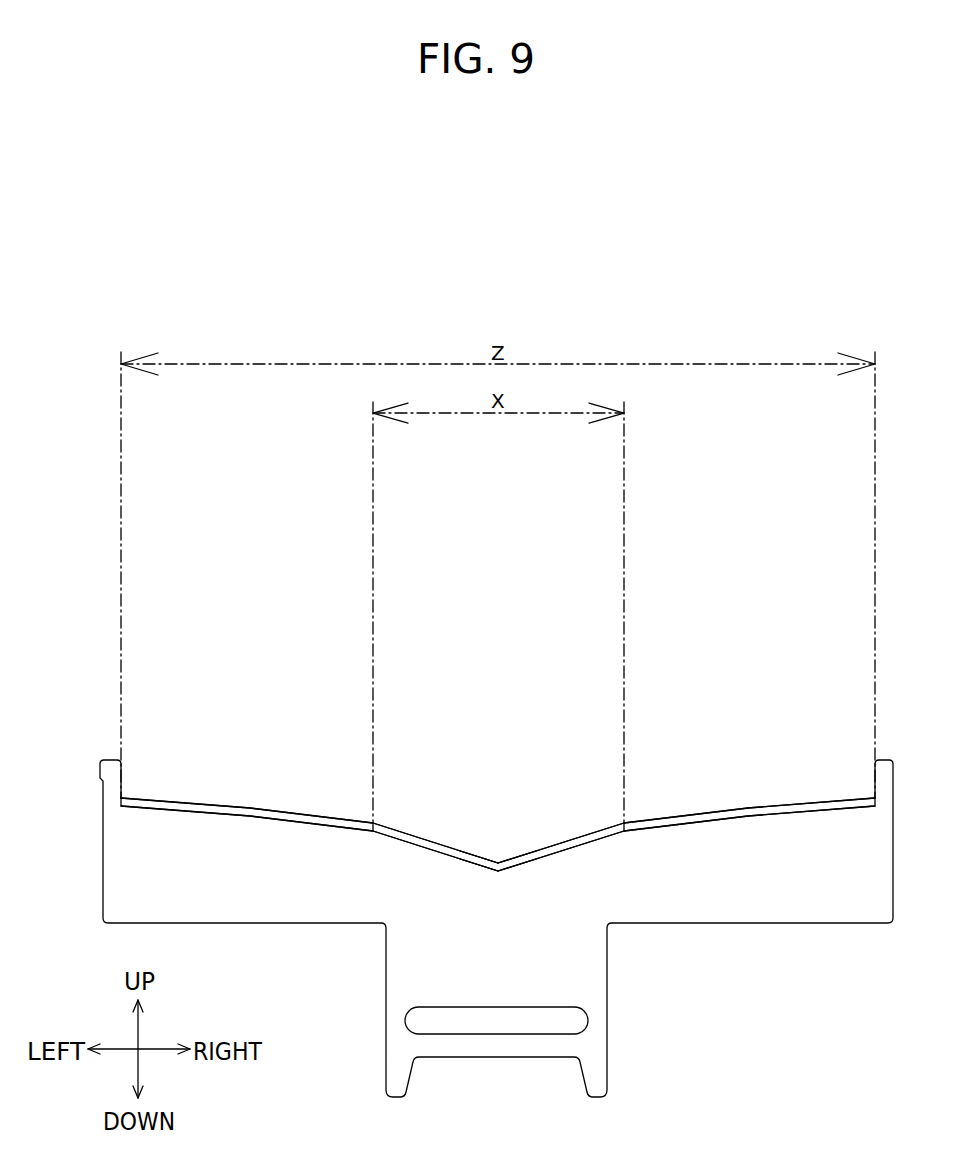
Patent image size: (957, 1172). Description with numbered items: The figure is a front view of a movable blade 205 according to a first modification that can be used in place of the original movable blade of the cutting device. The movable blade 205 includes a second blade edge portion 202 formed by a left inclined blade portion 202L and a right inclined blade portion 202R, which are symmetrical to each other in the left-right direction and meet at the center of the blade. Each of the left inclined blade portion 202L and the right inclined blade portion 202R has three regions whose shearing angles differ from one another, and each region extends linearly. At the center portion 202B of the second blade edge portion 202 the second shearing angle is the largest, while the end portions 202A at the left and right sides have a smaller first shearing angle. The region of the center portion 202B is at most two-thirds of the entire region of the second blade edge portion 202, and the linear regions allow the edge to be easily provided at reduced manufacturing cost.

The second blade edge portion 202 is at (610, 600).
The left inclined blade portion 202L is at (430, 842).
The right inclined blade portion 202R is at (581, 842).
The end portion 202A is at (212, 796).
The center portion 202B is at (492, 822).
The movable blade 205 is at (722, 663).